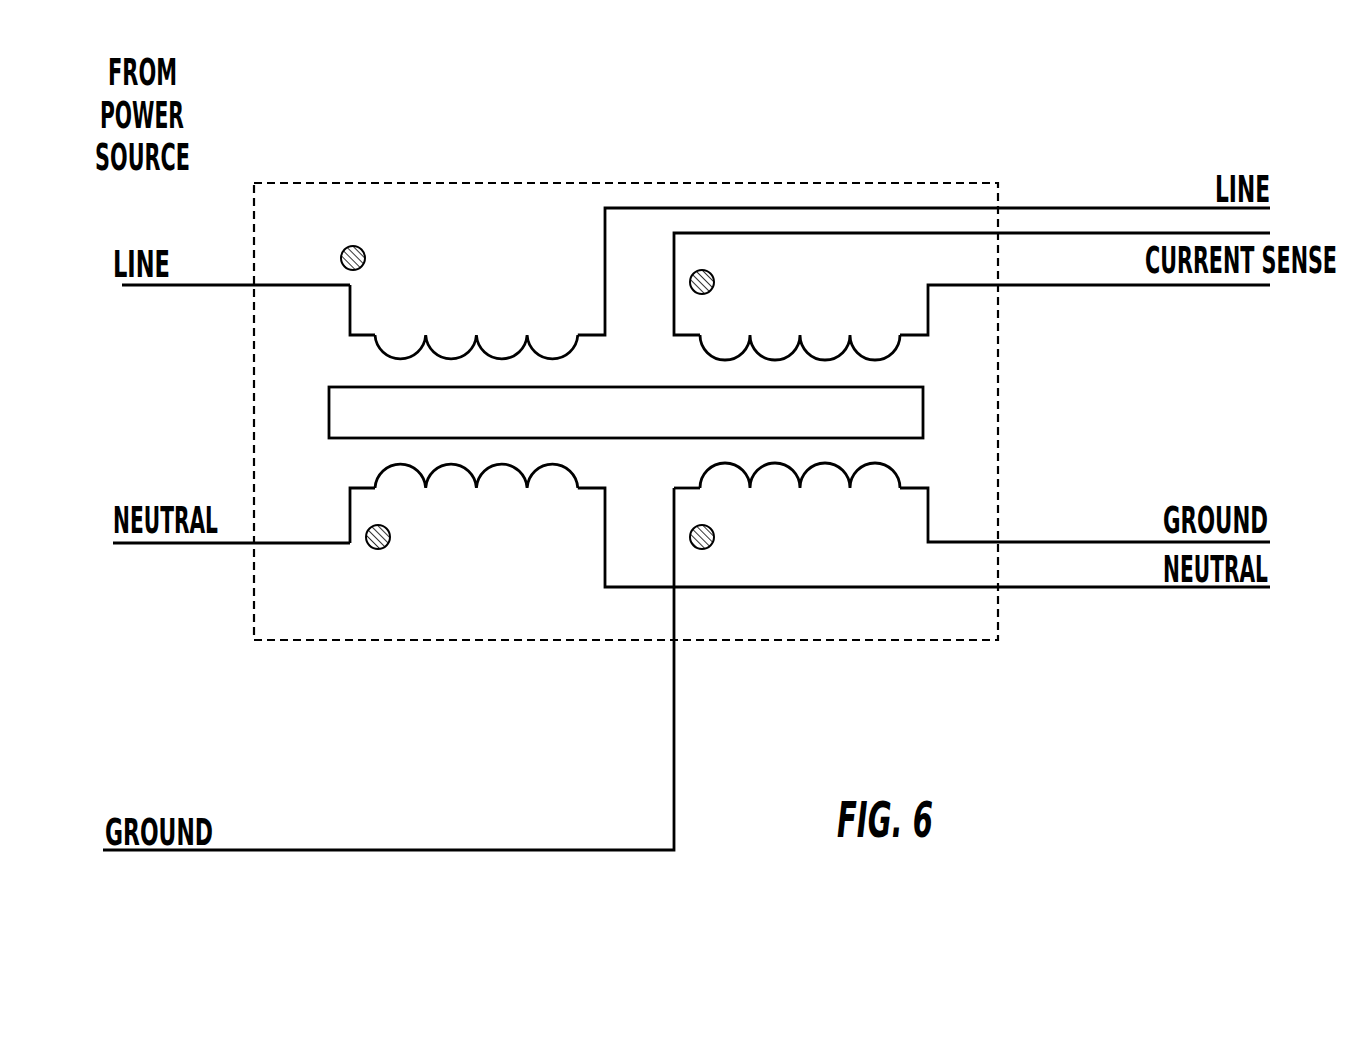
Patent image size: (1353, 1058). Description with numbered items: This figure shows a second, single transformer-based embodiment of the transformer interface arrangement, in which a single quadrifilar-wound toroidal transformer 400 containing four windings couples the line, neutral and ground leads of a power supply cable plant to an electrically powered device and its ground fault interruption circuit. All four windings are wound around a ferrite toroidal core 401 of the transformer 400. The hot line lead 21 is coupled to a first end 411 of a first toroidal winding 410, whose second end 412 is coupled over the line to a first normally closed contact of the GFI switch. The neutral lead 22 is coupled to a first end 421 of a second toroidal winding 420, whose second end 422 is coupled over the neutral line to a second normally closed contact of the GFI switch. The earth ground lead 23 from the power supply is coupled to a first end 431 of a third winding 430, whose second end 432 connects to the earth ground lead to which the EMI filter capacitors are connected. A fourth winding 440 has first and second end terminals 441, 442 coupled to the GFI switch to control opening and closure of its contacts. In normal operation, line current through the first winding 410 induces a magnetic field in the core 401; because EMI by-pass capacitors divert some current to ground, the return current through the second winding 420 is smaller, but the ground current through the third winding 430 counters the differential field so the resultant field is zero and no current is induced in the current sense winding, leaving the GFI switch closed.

The quadrifilar-wound toroidal transformer 400 is at (508, 183).
The ferrite toroidal core 401 is at (626, 412).
The line lead 21 is at (210, 283).
The neutral lead 22 is at (173, 545).
The earth ground lead 23 is at (309, 849).
The first toroidal winding 410 is at (455, 325).
The first end of first toroidal winding 411 is at (348, 287).
The second end of first toroidal winding 412 is at (603, 283).
The second toroidal winding 420 is at (488, 498).
The first end of second toroidal winding 421 is at (350, 525).
The second end of second toroidal winding 422 is at (605, 537).
The third winding 430 is at (808, 495).
The first end of third winding 431 is at (673, 518).
The second end of third winding 432 is at (930, 545).
The fourth winding 440 is at (780, 333).
The first end terminal of fourth winding 441 is at (673, 338).
The second end terminal of fourth winding 442 is at (928, 343).